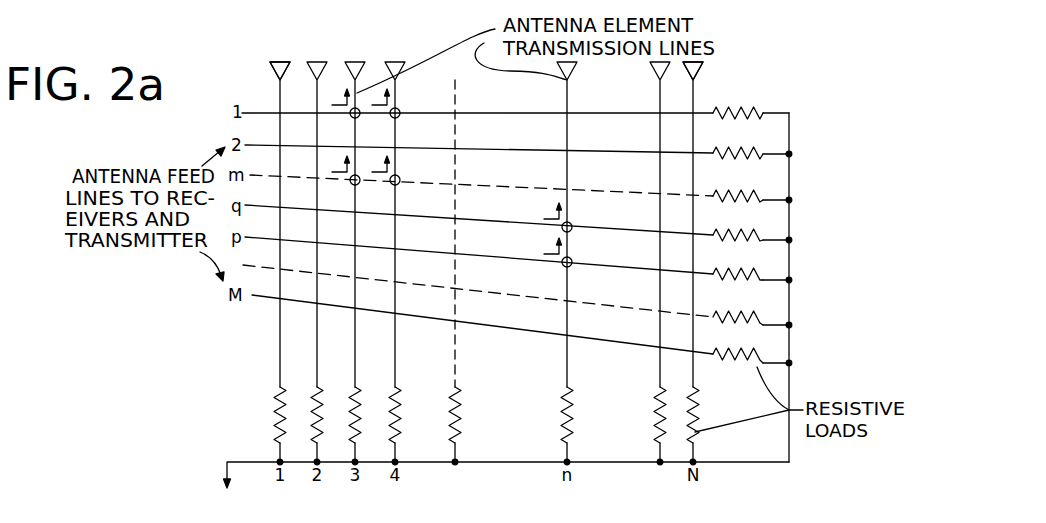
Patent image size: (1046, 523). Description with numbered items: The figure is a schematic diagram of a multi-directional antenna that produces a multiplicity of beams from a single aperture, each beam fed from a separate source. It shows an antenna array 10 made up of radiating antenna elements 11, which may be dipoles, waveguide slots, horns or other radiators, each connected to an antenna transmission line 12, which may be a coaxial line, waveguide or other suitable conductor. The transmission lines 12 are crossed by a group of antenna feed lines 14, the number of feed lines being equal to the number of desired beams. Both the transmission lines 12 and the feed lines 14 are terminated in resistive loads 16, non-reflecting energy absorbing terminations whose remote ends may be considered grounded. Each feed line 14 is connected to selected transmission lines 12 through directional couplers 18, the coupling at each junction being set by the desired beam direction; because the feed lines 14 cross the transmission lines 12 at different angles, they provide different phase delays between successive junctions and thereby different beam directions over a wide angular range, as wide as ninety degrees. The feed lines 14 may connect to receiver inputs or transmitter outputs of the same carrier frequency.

The antenna array 10 is at (708, 66).
The radiating antenna element 11 is at (272, 64).
The antenna transmission line 12 is at (280, 91).
The antenna feed line 14 is at (594, 113).
The resistive load 16 is at (759, 116).
The directional coupler 18 is at (399, 109).